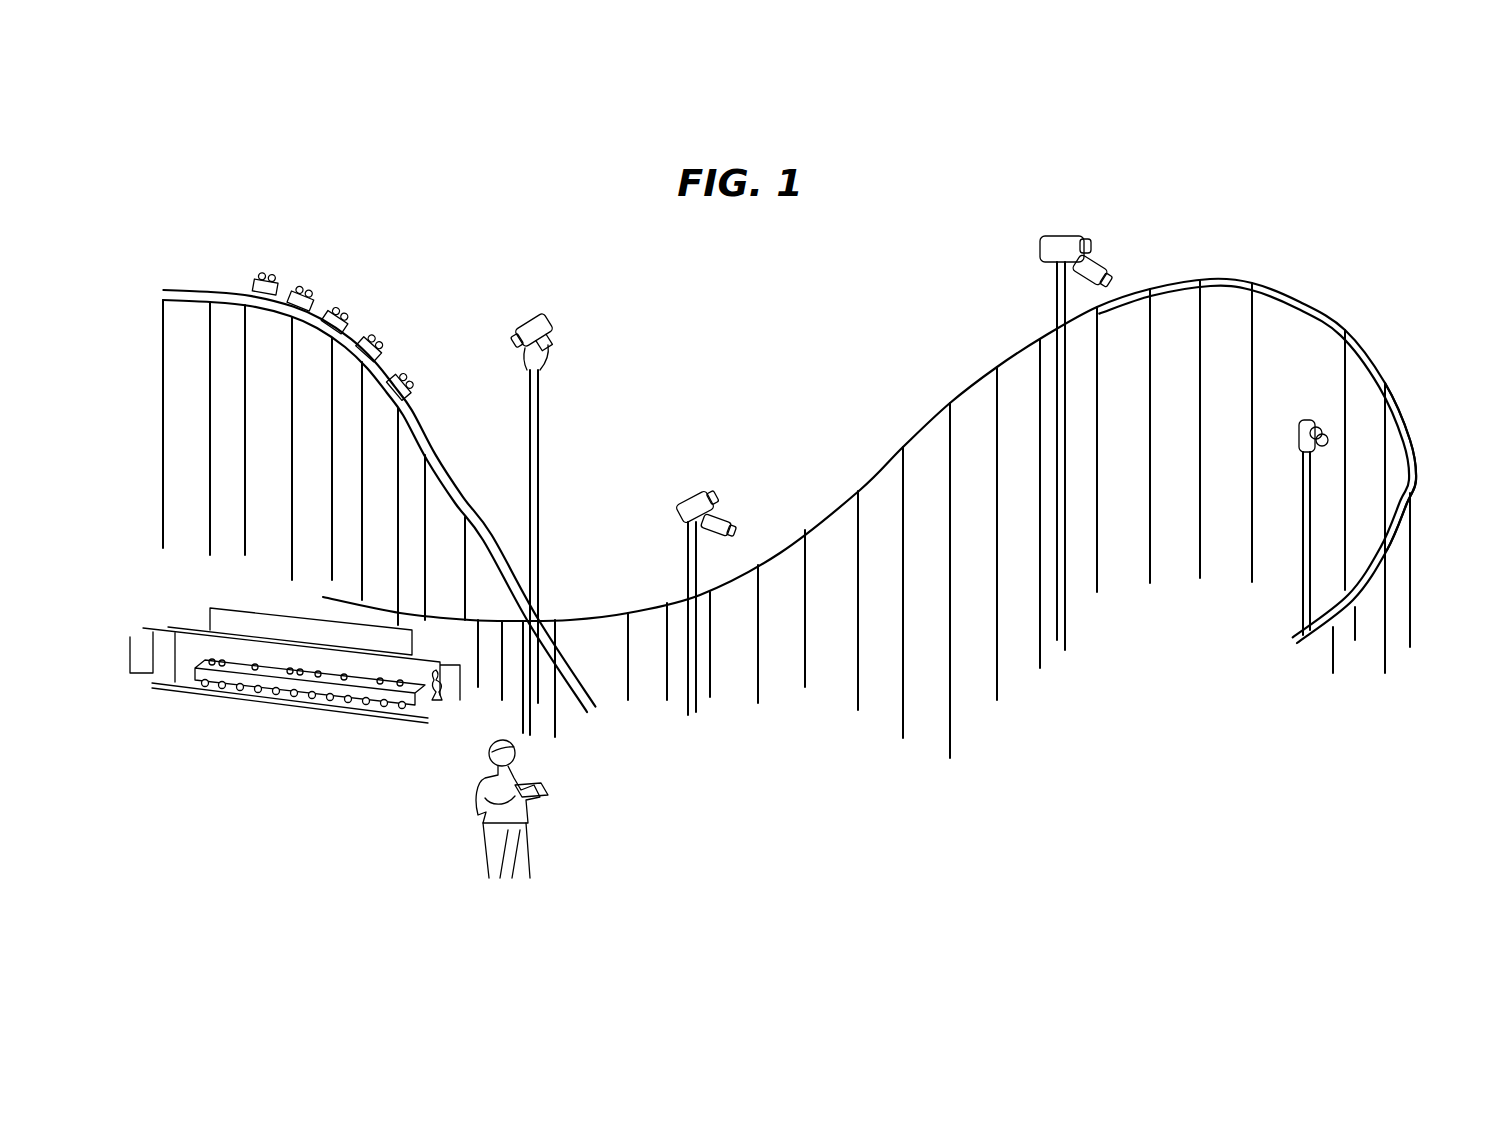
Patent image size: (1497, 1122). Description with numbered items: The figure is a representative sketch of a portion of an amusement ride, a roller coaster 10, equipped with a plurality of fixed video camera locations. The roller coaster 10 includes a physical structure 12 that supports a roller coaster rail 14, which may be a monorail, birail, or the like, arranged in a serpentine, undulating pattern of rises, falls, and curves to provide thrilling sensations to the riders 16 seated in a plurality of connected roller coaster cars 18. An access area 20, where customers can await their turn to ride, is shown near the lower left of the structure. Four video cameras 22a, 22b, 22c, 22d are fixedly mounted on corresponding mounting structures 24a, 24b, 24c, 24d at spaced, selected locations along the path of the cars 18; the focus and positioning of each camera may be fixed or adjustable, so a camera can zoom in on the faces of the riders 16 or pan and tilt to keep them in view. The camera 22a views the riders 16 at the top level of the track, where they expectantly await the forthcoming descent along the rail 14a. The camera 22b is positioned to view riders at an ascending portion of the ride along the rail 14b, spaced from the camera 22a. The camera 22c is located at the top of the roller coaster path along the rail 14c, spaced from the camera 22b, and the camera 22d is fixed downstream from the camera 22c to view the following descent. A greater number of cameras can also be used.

The roller coaster 10 is at (867, 413).
The physical structure 12 is at (1105, 619).
The roller coaster rail 14 is at (1394, 349).
The rail portion (descent) 14a is at (186, 290).
The rail portion (ascending portion) 14b is at (1416, 483).
The rail portion (top of path) 14c is at (1253, 282).
The riders 16 is at (280, 279).
The roller coaster cars 18 is at (334, 330).
The access area 20 is at (252, 709).
The video camera 22a is at (570, 347).
The video camera 22b is at (1297, 430).
The video camera 22c is at (1103, 258).
The video camera 22d is at (684, 485).
The mounting structure 24a is at (540, 470).
The mounting structure 24b is at (1302, 616).
The mounting structure 24c is at (1056, 292).
The mounting structure 24d is at (700, 565).